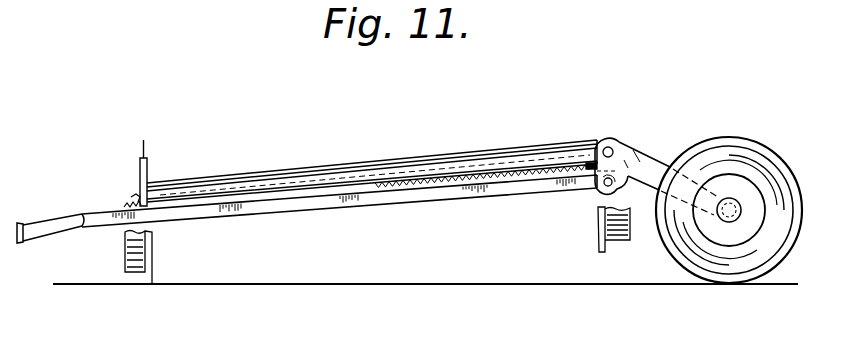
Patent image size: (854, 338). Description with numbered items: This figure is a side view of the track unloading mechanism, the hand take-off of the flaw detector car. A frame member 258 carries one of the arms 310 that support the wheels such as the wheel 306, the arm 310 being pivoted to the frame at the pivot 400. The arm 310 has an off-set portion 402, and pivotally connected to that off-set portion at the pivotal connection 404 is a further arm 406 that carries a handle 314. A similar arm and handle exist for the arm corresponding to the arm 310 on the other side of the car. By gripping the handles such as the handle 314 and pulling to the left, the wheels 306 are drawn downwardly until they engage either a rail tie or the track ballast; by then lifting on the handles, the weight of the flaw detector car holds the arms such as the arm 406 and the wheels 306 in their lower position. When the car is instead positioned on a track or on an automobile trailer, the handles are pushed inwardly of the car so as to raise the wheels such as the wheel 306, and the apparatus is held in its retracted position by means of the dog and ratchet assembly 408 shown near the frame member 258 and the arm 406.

The frame member 258 is at (412, 162).
The wheel 306 is at (742, 143).
The arm 310 is at (641, 157).
The handle 314 is at (53, 230).
The pivot 400 is at (609, 146).
The off-set portion 402 is at (603, 190).
The pivotal connection 404 is at (598, 187).
The arm 406 is at (388, 198).
The dog and ratchet assembly 408 is at (131, 196).